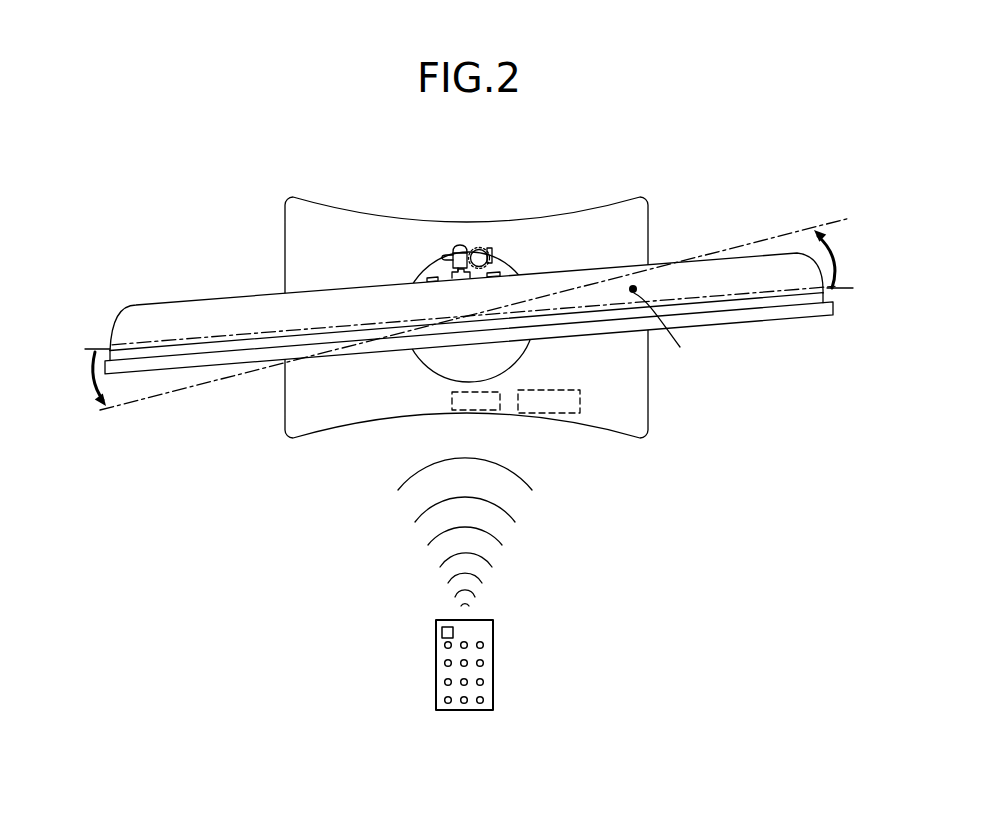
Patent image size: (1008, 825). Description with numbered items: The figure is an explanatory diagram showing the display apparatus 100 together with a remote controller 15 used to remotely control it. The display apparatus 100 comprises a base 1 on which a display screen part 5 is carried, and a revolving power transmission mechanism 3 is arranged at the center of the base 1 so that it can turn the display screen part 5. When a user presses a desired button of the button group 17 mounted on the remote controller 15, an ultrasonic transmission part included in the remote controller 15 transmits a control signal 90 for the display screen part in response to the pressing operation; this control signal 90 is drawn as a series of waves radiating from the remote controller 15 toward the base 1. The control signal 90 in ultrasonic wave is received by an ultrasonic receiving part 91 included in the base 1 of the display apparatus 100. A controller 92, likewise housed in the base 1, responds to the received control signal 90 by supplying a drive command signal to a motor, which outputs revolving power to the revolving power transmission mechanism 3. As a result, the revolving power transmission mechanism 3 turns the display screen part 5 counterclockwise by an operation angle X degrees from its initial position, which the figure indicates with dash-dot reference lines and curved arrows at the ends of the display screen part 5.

The display apparatus 100 is at (404, 178).
The base 1 is at (363, 430).
The revolving power transmission mechanism 3 is at (458, 243).
The display screen part 5 is at (250, 313).
The ultrasonic receiving part 91 is at (448, 407).
The controller 92 is at (550, 413).
The control signal 90 is at (505, 535).
The remote controller 15 is at (475, 672).
The button group 17 is at (447, 667).